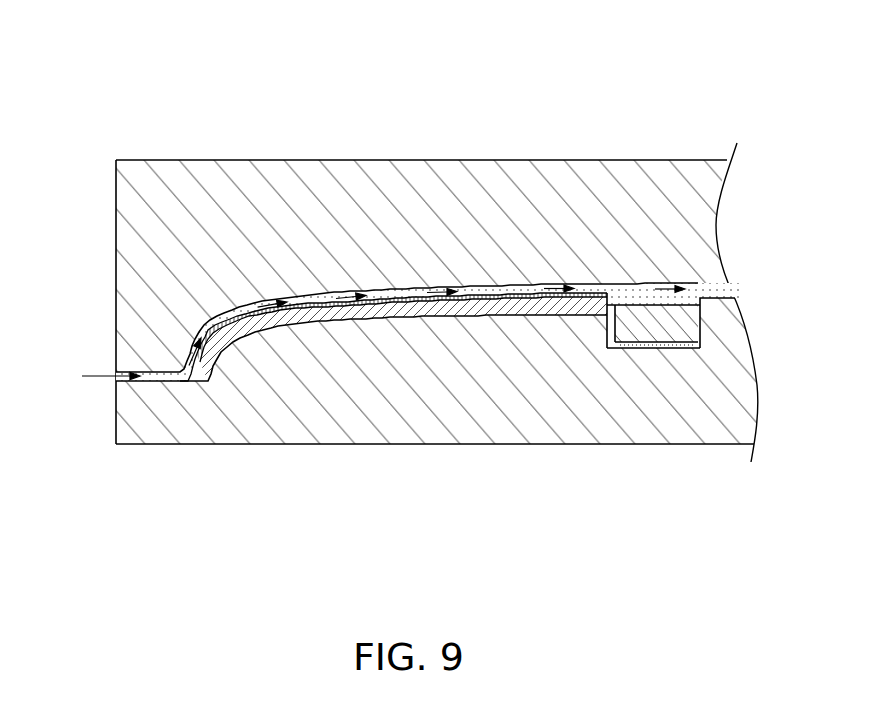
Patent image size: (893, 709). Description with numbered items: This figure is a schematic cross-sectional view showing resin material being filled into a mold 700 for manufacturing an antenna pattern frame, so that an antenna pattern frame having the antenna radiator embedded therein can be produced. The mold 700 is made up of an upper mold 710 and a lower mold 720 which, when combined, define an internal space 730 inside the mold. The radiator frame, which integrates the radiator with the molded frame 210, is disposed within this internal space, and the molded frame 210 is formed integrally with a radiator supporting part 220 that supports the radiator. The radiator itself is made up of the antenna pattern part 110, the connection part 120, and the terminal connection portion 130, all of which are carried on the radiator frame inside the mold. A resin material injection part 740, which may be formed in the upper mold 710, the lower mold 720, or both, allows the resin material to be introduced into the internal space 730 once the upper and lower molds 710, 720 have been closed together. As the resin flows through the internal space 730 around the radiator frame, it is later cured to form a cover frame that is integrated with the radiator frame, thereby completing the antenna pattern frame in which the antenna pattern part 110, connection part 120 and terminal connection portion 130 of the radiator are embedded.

The mold for manufacturing an antenna pattern frame 700 is at (168, 54).
The upper mold 710 is at (206, 167).
The lower mold 720 is at (243, 430).
The internal space 730 is at (293, 303).
The resin material injection part 740 is at (117, 374).
The antenna pattern part 110 is at (465, 288).
The molded frame 210 is at (388, 318).
The connection part 120 is at (610, 317).
The terminal connection portion 130 is at (638, 340).
The radiator supporting part 220 is at (685, 320).